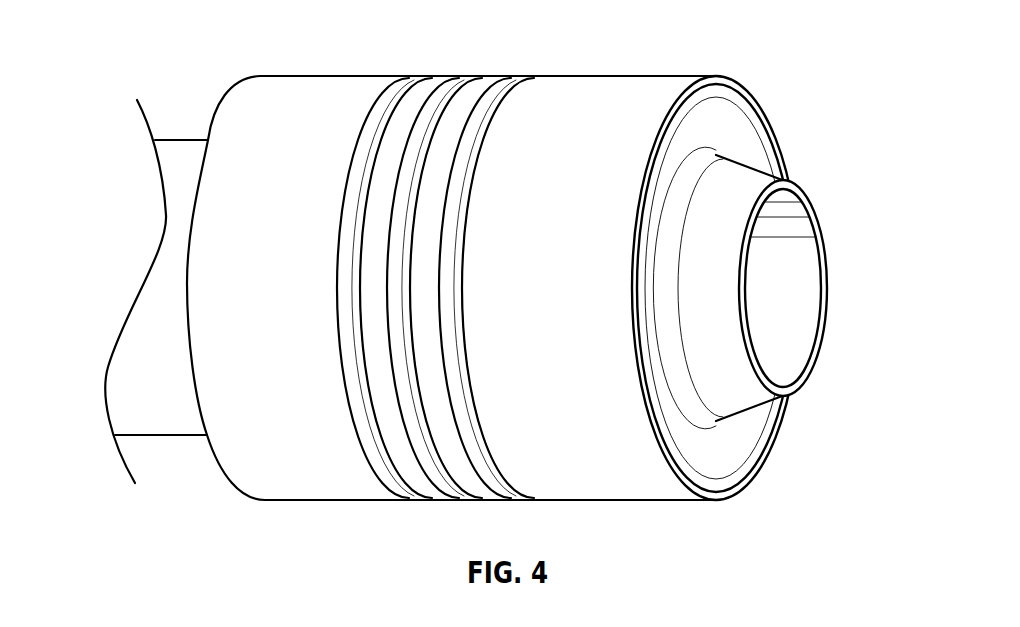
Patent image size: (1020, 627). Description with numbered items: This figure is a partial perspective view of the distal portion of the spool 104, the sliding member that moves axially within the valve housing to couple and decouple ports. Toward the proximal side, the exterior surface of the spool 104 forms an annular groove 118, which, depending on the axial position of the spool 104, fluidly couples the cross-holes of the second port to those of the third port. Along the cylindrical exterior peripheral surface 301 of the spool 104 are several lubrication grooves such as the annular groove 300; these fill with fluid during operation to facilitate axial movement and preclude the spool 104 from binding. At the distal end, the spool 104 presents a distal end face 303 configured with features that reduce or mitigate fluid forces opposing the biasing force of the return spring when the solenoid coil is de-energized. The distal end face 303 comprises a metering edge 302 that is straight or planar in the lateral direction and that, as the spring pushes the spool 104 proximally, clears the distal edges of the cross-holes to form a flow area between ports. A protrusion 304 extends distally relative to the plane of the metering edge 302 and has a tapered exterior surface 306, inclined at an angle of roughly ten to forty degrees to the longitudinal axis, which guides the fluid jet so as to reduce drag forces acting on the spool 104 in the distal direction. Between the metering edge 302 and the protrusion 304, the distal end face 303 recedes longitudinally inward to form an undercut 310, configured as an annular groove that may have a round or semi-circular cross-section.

The spool 104 is at (140, 70).
The annular groove 118 is at (209, 127).
The lubrication annular groove 300 is at (421, 80).
The exterior peripheral surface 301 is at (650, 86).
The metering edge 302 is at (748, 484).
The distal end face 303 is at (840, 334).
The protrusion 304 is at (793, 178).
The tapered exterior surface 306 is at (743, 173).
The undercut 310 is at (745, 445).